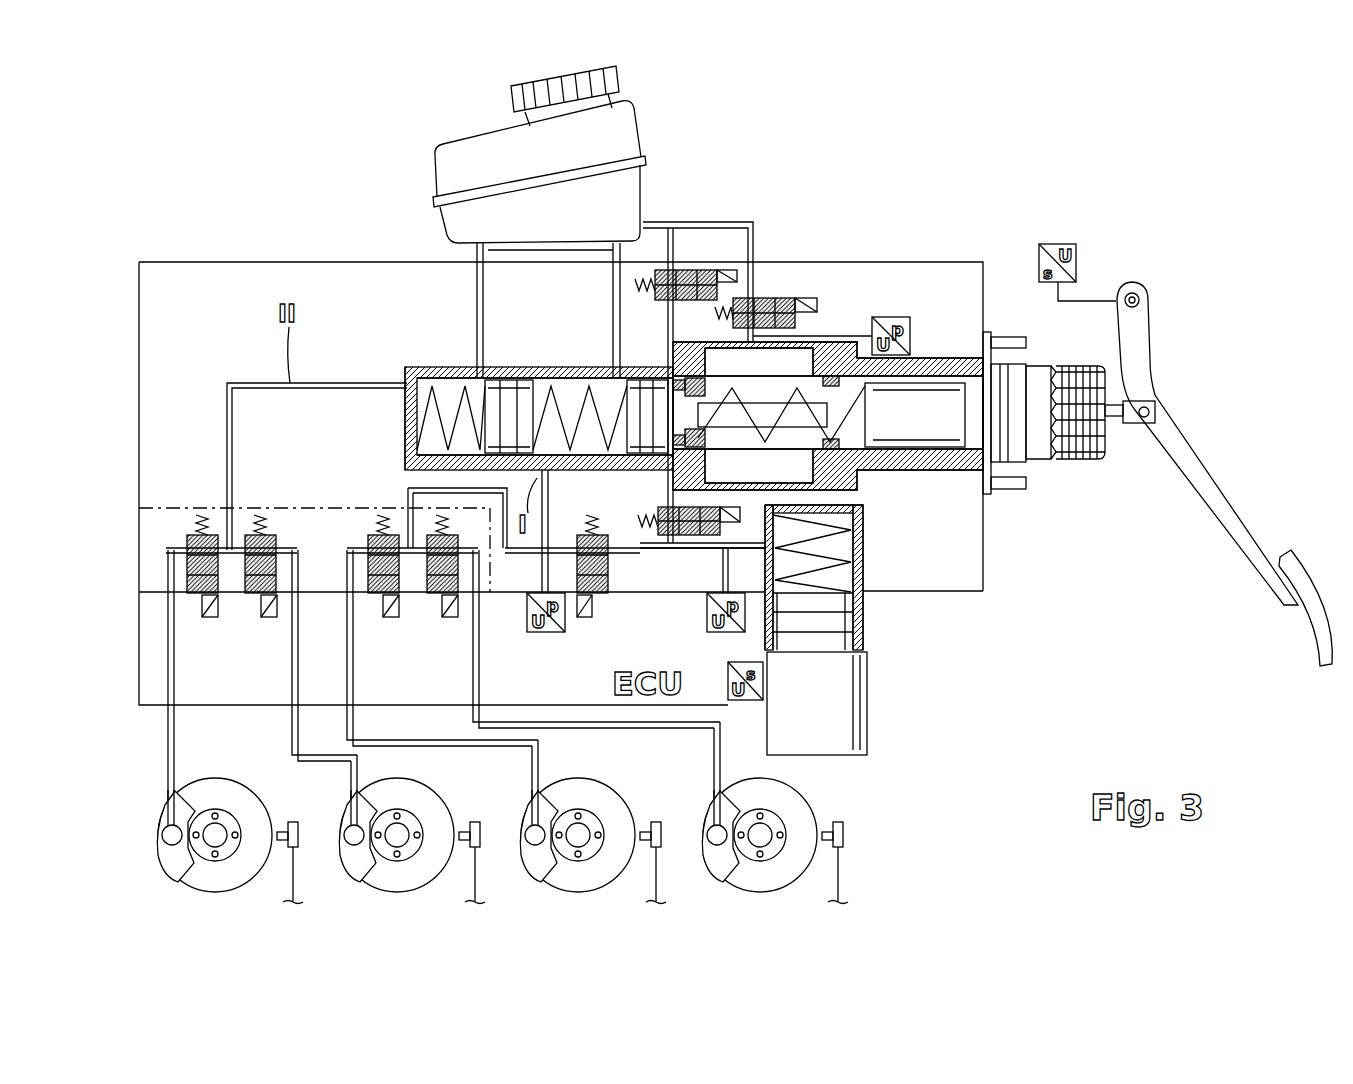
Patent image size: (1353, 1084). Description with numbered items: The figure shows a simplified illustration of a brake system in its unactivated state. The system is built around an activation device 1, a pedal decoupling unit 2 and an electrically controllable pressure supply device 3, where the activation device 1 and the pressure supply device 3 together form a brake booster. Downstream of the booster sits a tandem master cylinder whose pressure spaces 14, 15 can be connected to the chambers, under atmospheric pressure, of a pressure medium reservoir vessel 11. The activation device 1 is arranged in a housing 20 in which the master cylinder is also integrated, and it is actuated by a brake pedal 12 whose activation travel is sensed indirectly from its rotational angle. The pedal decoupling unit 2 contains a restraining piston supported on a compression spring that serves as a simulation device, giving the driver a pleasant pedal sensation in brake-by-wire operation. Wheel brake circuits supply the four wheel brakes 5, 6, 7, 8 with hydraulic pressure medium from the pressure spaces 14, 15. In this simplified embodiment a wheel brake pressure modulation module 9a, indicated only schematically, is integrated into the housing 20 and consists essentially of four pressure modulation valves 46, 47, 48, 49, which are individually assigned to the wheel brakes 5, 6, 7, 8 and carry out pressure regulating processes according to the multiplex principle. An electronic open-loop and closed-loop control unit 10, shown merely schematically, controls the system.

The activation device 1 is at (1061, 470).
The pedal decoupling unit 2 is at (935, 352).
The electrically controllable pressure supply device 3 is at (850, 770).
The wheel brake 5 is at (175, 858).
The wheel brake 6 is at (357, 858).
The wheel brake 7 is at (538, 858).
The wheel brake 8 is at (720, 858).
The wheel brake pressure modulation module 9a is at (167, 498).
The electronic open-loop and closed-loop control unit 10 is at (157, 686).
The pressure medium reservoir vessel 11 is at (458, 163).
The brake pedal 12 is at (1189, 475).
The pressure space 14 is at (572, 390).
The pressure space 15 is at (443, 390).
The housing 20 is at (962, 567).
The pressure modulation valve 46 is at (202, 597).
The pressure modulation valve 47 is at (260, 597).
The pressure modulation valve 48 is at (382, 597).
The pressure modulation valve 49 is at (440, 597).